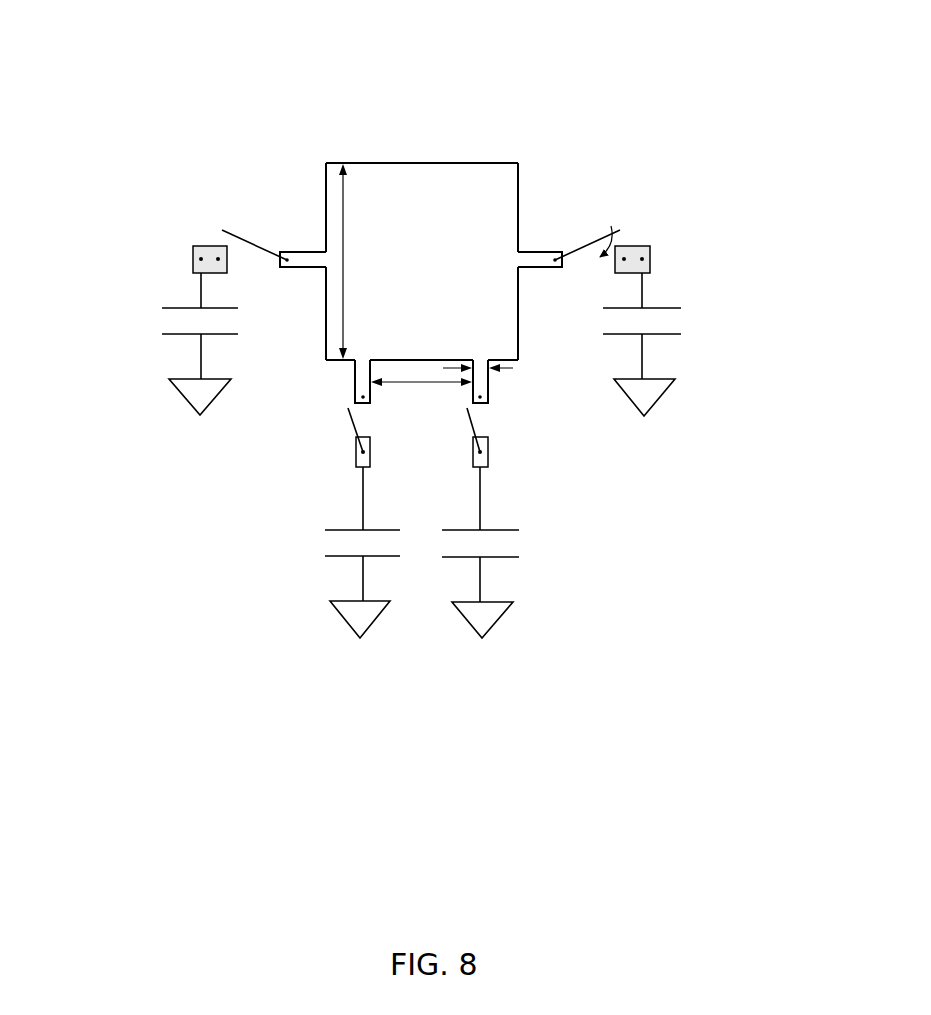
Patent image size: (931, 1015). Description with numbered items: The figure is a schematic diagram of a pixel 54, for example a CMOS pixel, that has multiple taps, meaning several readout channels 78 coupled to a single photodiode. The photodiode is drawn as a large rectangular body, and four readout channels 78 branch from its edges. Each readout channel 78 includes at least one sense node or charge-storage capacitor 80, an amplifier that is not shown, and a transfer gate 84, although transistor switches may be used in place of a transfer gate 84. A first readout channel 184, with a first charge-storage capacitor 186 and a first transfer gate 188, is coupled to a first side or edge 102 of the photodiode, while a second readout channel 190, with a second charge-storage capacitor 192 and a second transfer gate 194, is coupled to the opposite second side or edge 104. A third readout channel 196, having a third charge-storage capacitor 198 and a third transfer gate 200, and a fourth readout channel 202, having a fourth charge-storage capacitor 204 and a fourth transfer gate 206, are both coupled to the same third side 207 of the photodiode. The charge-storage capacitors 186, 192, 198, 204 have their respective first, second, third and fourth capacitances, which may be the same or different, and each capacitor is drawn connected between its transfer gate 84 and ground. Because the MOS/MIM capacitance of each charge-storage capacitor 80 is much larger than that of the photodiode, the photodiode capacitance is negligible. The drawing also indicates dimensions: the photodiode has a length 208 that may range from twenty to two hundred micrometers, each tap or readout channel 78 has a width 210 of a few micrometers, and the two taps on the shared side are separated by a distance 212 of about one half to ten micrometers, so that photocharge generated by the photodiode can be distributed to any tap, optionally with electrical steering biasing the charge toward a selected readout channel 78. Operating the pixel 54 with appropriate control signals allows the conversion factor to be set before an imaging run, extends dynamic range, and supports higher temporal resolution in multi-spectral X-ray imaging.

The pixel 54 is at (422, 64).
The first side or edge 102 is at (323, 168).
The second side or edge 104 is at (520, 168).
The third side 207 is at (330, 361).
The length 208 is at (345, 224).
The width of the tap or readout channel 210 is at (508, 371).
The distance 212 is at (423, 388).
The readout channel 78 is at (432, 405).
The first readout channel 184 is at (160, 224).
The second readout channel 190 is at (702, 225).
The fourth readout channel 202 is at (253, 434).
The third readout channel 196 is at (590, 432).
The transfer gate 84 is at (421, 331).
The first transfer gate 188 is at (267, 251).
The second transfer gate 194 is at (565, 248).
The fourth transfer gate 206 is at (350, 423).
The third transfer gate 200 is at (474, 423).
The charge-storage capacitor 80 is at (422, 471).
The first charge-storage capacitor 186 is at (168, 338).
The second charge-storage capacitor 192 is at (667, 338).
The fourth charge-storage capacitor 204 is at (337, 558).
The third charge-storage capacitor 198 is at (508, 558).